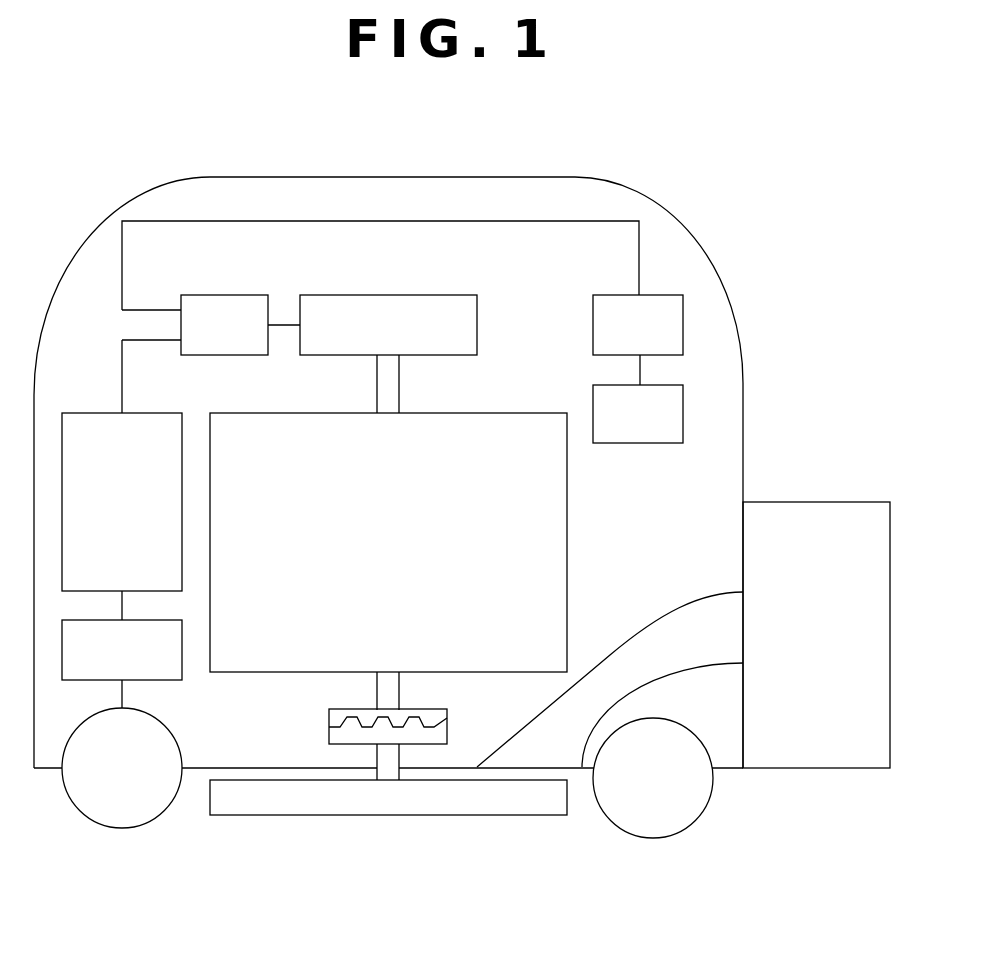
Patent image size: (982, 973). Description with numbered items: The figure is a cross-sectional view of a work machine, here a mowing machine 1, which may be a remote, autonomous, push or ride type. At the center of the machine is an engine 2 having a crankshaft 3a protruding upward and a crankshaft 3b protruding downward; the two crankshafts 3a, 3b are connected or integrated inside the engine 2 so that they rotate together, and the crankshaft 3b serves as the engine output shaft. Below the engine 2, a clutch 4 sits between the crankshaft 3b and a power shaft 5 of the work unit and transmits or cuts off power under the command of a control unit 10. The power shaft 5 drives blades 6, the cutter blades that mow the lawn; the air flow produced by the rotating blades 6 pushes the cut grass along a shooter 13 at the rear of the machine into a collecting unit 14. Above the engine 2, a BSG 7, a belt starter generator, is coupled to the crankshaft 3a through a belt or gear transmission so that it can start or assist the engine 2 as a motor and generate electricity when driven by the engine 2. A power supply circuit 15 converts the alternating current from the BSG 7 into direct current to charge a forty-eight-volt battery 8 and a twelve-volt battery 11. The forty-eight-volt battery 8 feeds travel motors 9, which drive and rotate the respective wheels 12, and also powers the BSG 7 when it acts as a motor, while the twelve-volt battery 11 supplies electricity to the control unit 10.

The mowing machine 1 is at (527, 176).
The engine 2 is at (567, 572).
The crankshaft 3a is at (400, 391).
The crankshaft 3b is at (400, 693).
The clutch 4 is at (447, 722).
The power shaft 5 is at (400, 757).
The blades 6 is at (472, 815).
The BSG 7 is at (368, 295).
The 48-V battery 8 is at (150, 413).
The travel motors 9 is at (97, 682).
The control unit 10 is at (680, 385).
The 12-V battery 11 is at (650, 295).
The wheels 12 is at (182, 752).
The shooter 13 is at (662, 613).
The collecting unit 14 is at (800, 502).
The power supply circuit 15 is at (198, 295).